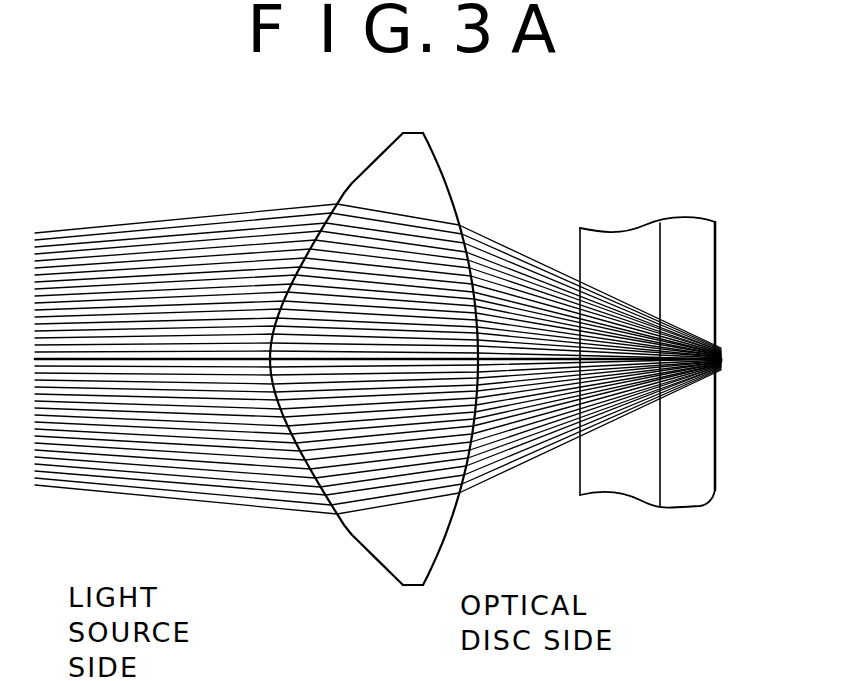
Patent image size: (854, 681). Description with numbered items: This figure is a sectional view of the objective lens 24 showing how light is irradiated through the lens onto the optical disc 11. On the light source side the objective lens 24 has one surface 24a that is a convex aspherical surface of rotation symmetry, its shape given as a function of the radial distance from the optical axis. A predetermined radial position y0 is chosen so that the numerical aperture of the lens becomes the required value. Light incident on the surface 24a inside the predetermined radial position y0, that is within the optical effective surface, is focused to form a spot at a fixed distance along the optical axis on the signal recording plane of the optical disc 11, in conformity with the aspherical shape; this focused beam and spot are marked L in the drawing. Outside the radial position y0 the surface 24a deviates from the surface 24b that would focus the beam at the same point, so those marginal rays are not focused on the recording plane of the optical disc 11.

The objective lens 24 is at (494, 359).
The light-source side surface of the objective lens 24a is at (350, 238).
The surface 24b is at (705, 465).
The optical disc 11 is at (688, 218).
The laser beam / focal point L is at (725, 360).
The predetermined radial position y0 is at (293, 548).